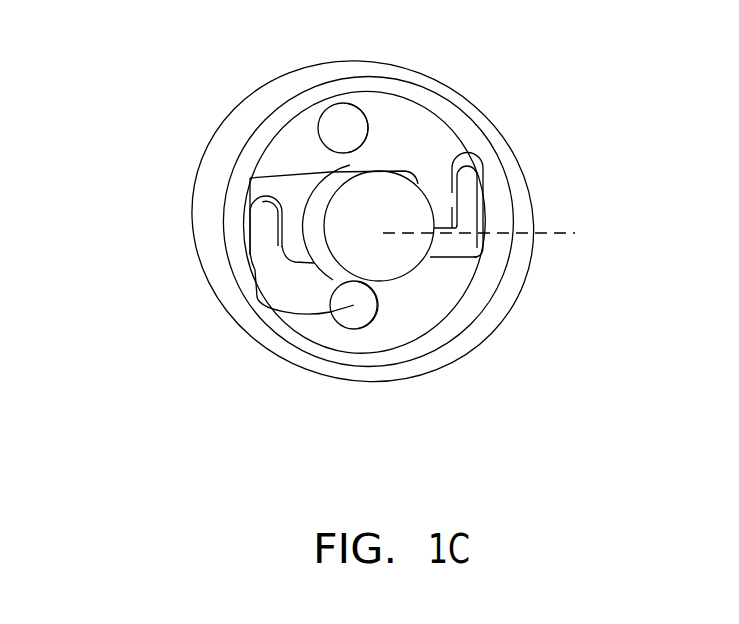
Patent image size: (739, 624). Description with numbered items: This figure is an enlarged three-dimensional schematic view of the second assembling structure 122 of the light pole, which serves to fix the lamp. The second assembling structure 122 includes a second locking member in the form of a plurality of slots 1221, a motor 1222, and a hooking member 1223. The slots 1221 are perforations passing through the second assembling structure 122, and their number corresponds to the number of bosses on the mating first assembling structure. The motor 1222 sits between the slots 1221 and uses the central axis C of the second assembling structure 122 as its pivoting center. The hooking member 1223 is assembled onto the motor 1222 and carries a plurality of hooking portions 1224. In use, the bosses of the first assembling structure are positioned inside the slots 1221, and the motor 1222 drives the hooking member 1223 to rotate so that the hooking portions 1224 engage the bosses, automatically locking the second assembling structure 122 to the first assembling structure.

The second assembling structure 122 is at (508, 150).
The slots 1221 is at (307, 362).
The motor 1222 is at (390, 265).
The hooking member 1223 is at (450, 246).
The hooking portions 1224 is at (251, 245).
The central axis C is at (490, 233).